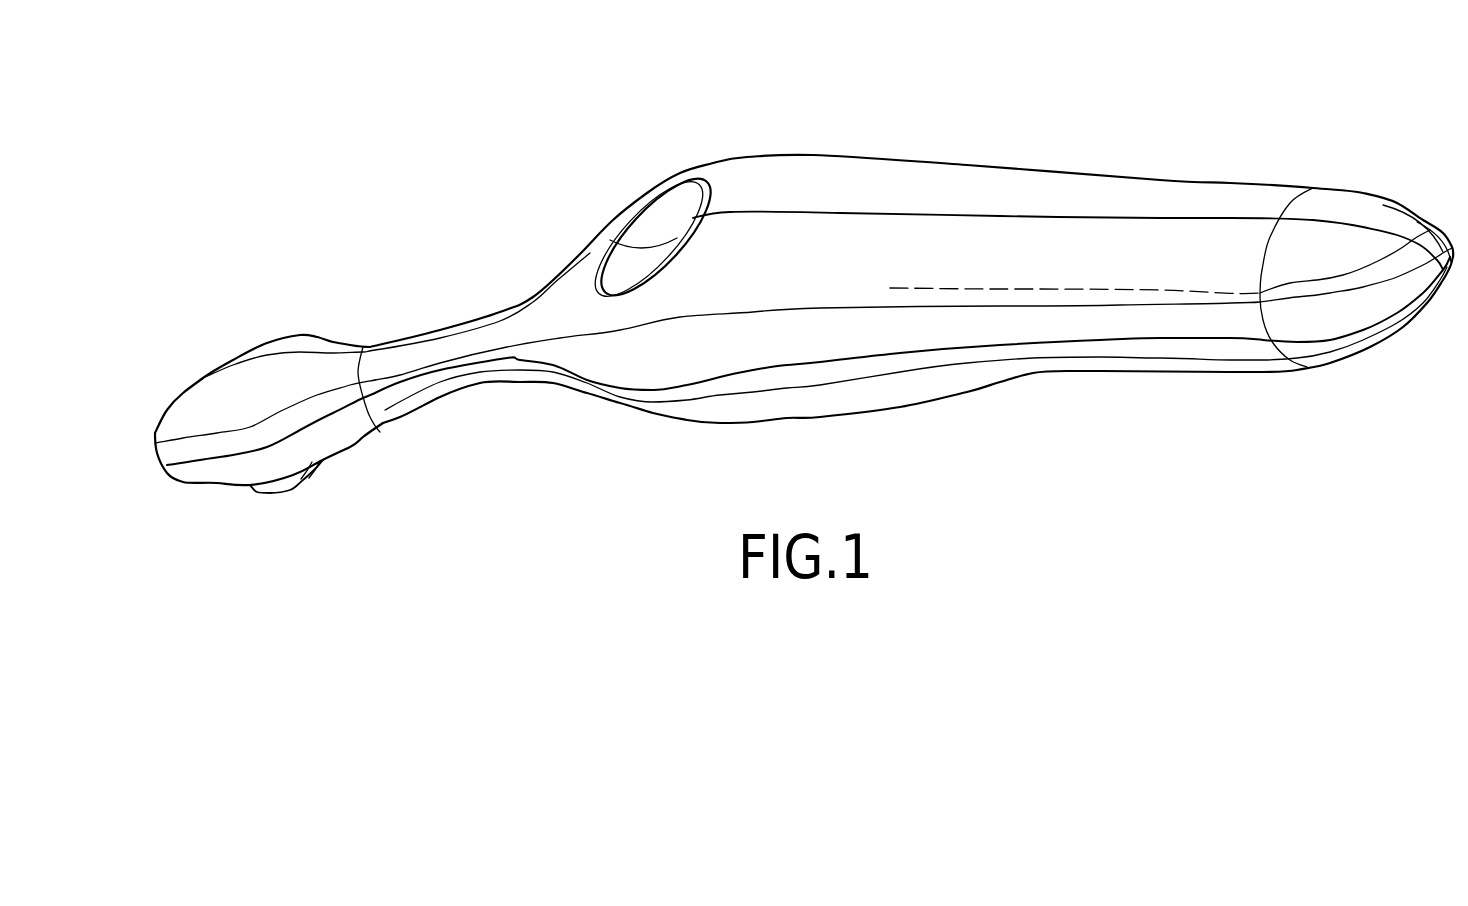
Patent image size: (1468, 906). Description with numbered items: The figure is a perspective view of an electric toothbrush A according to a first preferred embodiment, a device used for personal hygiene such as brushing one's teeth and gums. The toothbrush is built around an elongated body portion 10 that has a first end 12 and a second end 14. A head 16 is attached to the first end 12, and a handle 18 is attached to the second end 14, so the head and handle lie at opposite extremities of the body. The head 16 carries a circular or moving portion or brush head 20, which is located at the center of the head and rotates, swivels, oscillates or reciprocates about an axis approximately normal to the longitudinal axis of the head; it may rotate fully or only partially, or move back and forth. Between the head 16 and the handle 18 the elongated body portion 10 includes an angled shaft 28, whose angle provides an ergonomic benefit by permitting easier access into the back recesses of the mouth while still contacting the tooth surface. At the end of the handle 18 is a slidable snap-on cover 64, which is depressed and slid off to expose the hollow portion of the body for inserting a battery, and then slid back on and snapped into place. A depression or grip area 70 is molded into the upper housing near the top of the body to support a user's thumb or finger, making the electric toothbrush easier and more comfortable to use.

The elongated body portion 10 is at (838, 371).
The first end 12 is at (340, 340).
The second end 14 is at (1218, 358).
The head 16 is at (260, 378).
The handle 18 is at (1055, 320).
The circular portion 20 is at (270, 485).
The angled shaft 28 is at (450, 380).
The slidable snap-on cover 64 is at (1353, 337).
The depression or grip area 70 is at (680, 202).
The electric toothbrush A is at (868, 140).